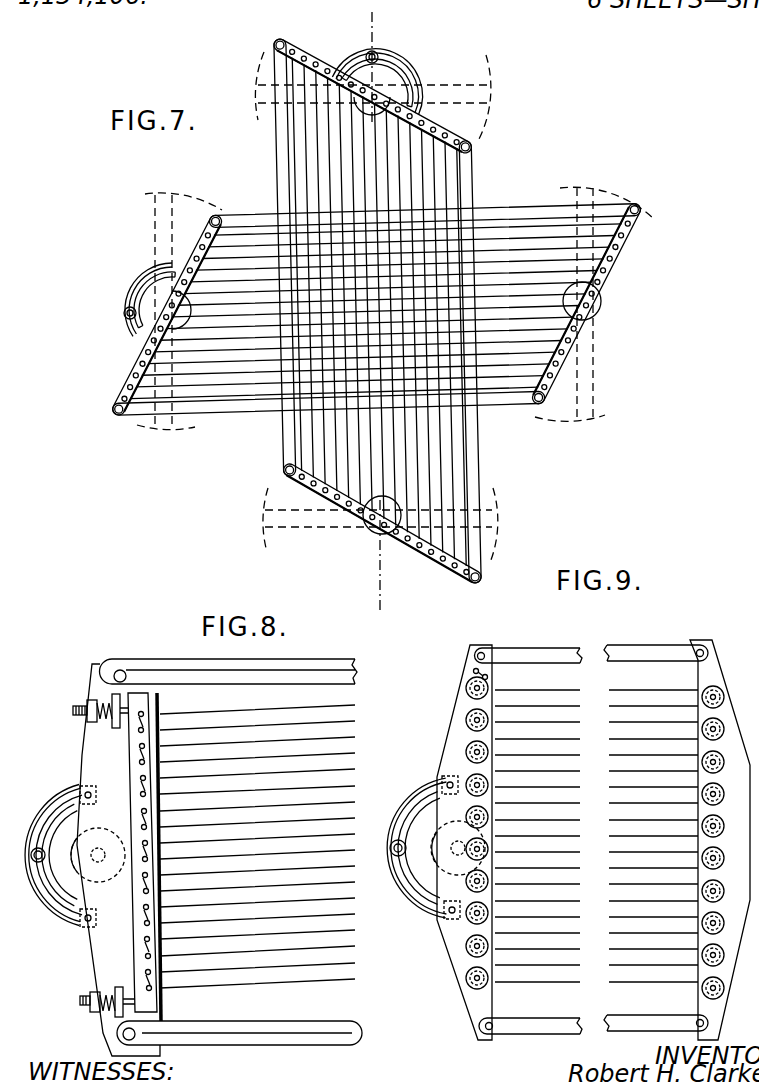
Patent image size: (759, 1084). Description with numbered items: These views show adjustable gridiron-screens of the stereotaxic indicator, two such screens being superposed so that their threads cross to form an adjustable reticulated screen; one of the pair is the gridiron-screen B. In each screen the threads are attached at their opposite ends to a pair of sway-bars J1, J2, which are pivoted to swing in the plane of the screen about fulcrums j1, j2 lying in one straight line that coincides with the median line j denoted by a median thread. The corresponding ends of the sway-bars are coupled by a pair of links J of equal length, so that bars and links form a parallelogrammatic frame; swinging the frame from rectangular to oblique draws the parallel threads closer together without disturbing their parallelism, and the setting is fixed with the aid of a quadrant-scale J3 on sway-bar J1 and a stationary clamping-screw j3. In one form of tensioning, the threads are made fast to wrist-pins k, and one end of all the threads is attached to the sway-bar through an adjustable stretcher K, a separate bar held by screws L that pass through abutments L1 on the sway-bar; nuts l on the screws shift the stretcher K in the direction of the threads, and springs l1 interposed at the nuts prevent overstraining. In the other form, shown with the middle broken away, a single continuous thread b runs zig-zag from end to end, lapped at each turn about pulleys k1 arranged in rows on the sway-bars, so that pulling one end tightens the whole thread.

In FIG. 7, the link J is at (278, 158).
In FIG. 8, the link J is at (336, 659).
In FIG. 9, the link J is at (592, 647).
In FIG. 7, the sway-bar J1 is at (321, 58).
In FIG. 8, the sway-bar J1 is at (82, 952).
In FIG. 9, the sway-bar J1 is at (457, 702).
In FIG. 7, the sway-bar J2 is at (628, 266).
In FIG. 7, the quadrant-scale J3 is at (412, 70).
In FIG. 8, the quadrant-scale J3 is at (72, 800).
In FIG. 9, the quadrant-scale J3 is at (444, 792).
In FIG. 7, the median line j is at (373, 18).
In FIG. 7, the fulcrum j1 is at (406, 94).
In FIG. 8, the fulcrum j1 is at (88, 871).
In FIG. 9, the fulcrum j1 is at (449, 869).
In FIG. 7, the fulcrum j2 is at (601, 304).
In FIG. 7, the clamping-screw j3 is at (378, 60).
In FIG. 8, the clamping-screw j3 is at (34, 848).
In FIG. 9, the clamping-screw j3 is at (390, 850).
In FIG. 8, the adjustable stretcher K is at (131, 893).
In FIG. 8, the wrist-pin k is at (140, 748).
In FIG. 9, the pulley k1 is at (466, 978).
In FIG. 8, the screw L is at (73, 711).
In FIG. 8, the abutment L1 is at (106, 696).
In FIG. 8, the nut l is at (92, 722).
In FIG. 8, the spring l1 is at (102, 708).
In FIG. 8, the gridiron-screen B is at (268, 848).
In FIG. 9, the gridiron-screen B is at (720, 824).
In FIG. 8, the continuous thread b is at (335, 760).
In FIG. 9, the continuous thread b is at (597, 800).